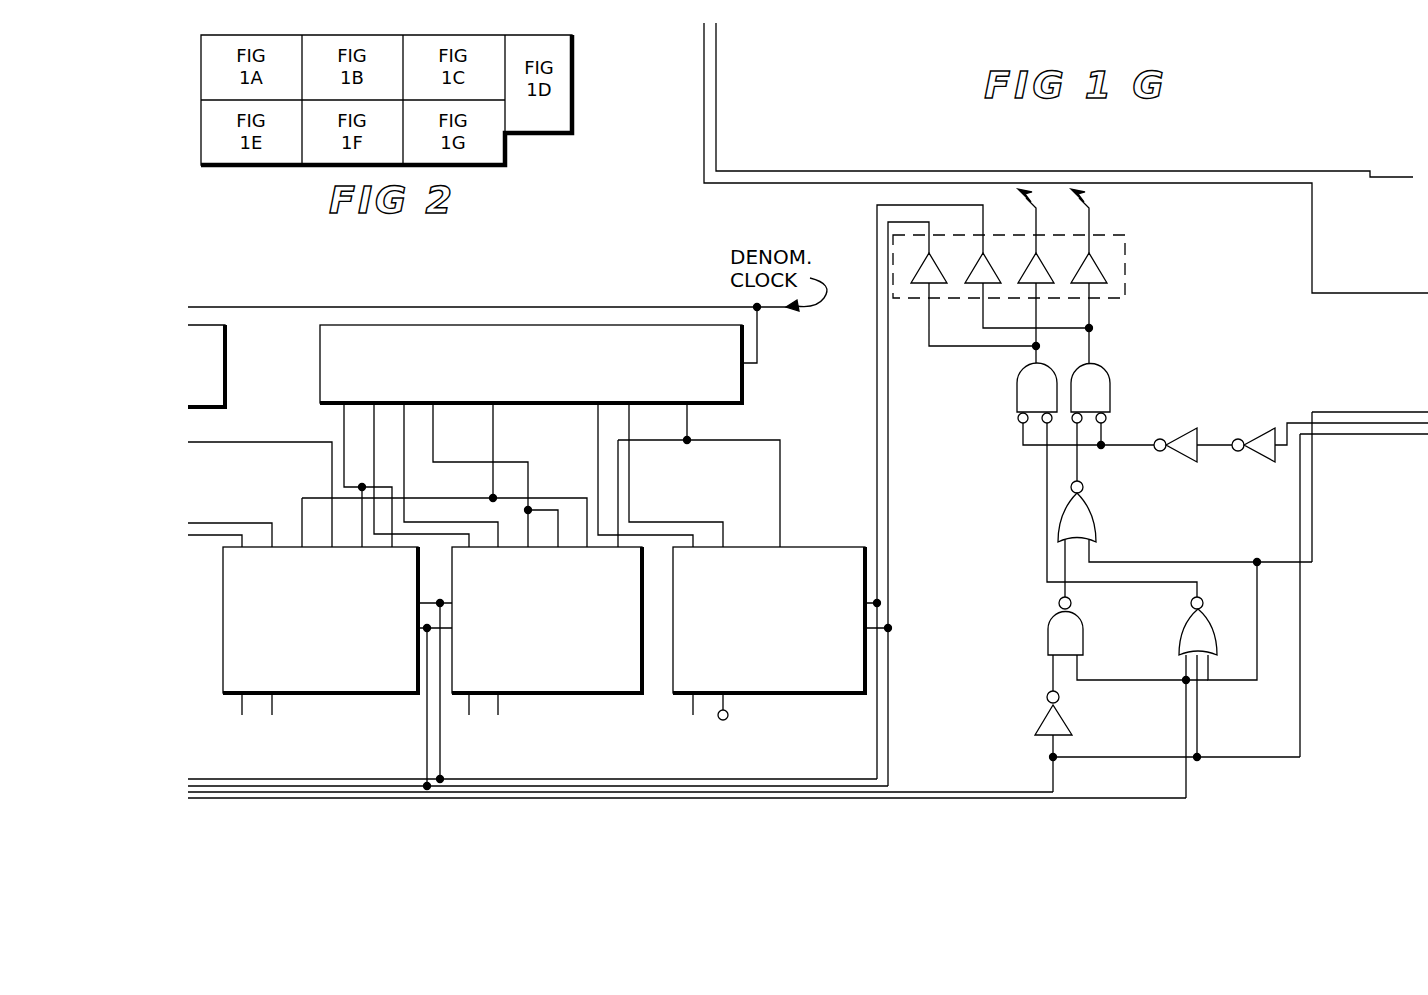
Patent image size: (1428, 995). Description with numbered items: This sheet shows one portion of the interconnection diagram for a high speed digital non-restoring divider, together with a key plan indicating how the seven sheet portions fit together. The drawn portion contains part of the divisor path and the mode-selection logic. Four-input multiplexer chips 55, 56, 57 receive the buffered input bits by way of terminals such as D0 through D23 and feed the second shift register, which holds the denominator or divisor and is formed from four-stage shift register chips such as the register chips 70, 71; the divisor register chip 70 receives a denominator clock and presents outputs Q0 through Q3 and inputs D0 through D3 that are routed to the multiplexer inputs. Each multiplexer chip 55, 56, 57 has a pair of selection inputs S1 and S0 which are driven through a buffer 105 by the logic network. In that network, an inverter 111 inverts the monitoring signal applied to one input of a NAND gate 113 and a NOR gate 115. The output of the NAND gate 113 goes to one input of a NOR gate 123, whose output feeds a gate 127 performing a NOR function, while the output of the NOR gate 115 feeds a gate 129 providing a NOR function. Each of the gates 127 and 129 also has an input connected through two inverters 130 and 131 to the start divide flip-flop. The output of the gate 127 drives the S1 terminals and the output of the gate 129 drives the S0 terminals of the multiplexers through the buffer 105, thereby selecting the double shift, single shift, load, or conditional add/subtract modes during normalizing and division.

The four stage shift register chip 70 is at (703, 407).
The four stage shift register chip 71 is at (226, 409).
The four input multiplexer chip 55 is at (815, 694).
The four input multiplexer chip 56 is at (590, 694).
The four input multiplexer chip 57 is at (362, 694).
The buffer 105 is at (1125, 260).
The gate performing a NOR function 127 is at (1106, 368).
The gate providing a NOR function 129 is at (1017, 395).
The inverter 130 is at (1184, 412).
The inverter 131 is at (1257, 462).
The NOR gate 123 is at (1097, 528).
The NAND gate 113 is at (1083, 628).
The NOR gate 115 is at (1179, 630).
The inverter 111 is at (1070, 720).